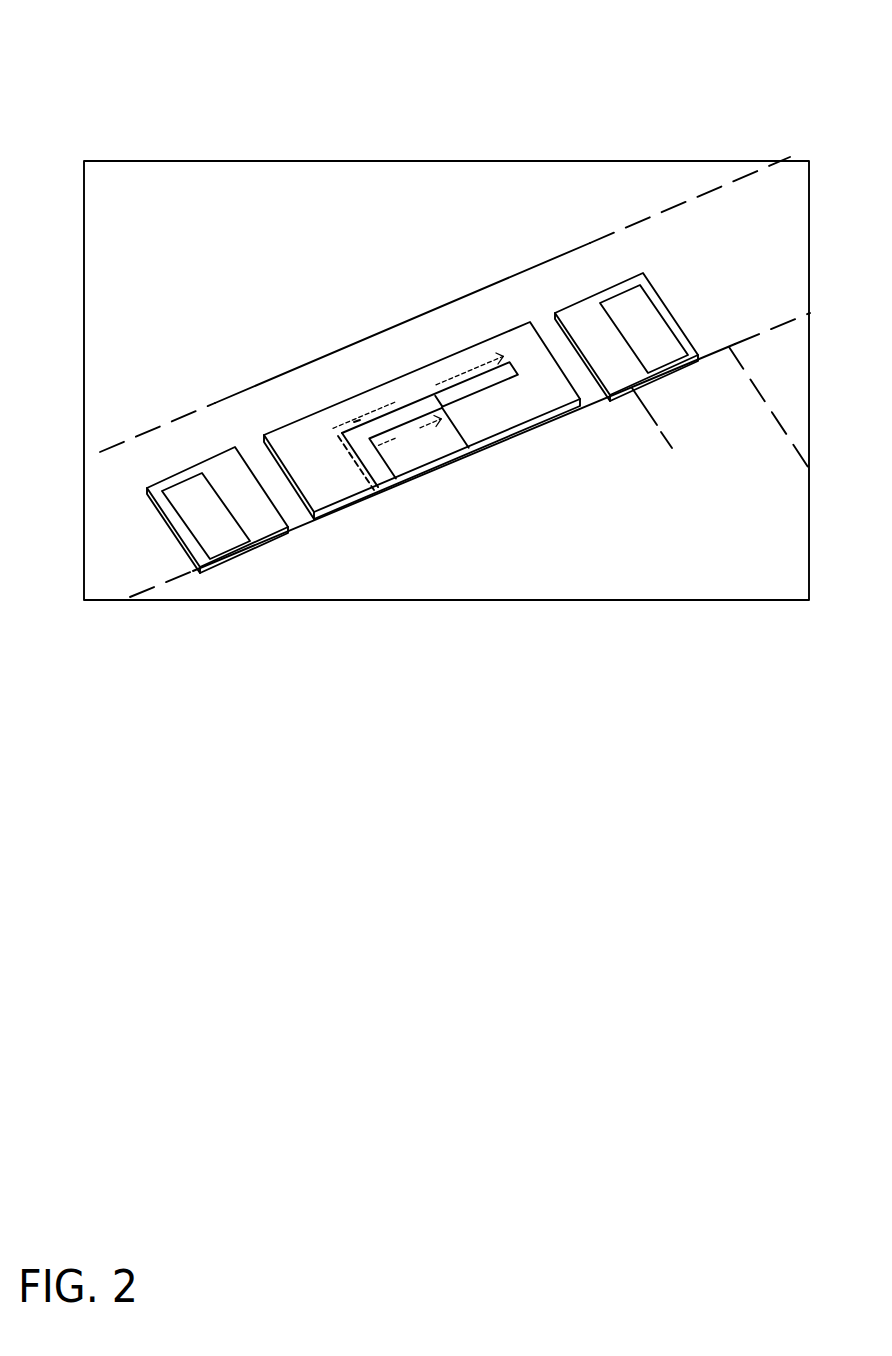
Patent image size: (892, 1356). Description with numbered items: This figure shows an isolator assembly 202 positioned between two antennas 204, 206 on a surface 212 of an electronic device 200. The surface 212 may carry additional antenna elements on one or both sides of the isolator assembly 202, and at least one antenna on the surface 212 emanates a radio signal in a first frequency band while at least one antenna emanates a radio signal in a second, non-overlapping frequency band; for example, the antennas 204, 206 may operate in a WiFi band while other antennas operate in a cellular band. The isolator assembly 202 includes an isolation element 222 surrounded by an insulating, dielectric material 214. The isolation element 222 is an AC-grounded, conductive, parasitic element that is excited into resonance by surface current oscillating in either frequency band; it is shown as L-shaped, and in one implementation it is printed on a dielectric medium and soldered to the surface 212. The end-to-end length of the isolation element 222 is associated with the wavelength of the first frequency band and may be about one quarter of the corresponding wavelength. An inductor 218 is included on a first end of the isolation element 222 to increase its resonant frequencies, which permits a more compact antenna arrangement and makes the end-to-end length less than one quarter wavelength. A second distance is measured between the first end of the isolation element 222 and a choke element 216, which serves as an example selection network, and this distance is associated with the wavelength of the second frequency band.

The electronic device 200 is at (104, 44).
The isolator assembly 202 is at (350, 428).
The antenna 204 is at (228, 448).
The antenna 206 is at (603, 290).
The surface 212 is at (478, 317).
The insulating material 214 is at (457, 362).
The choke element 216 is at (469, 448).
The inductor 218 is at (388, 487).
The isolation element 222 is at (354, 405).